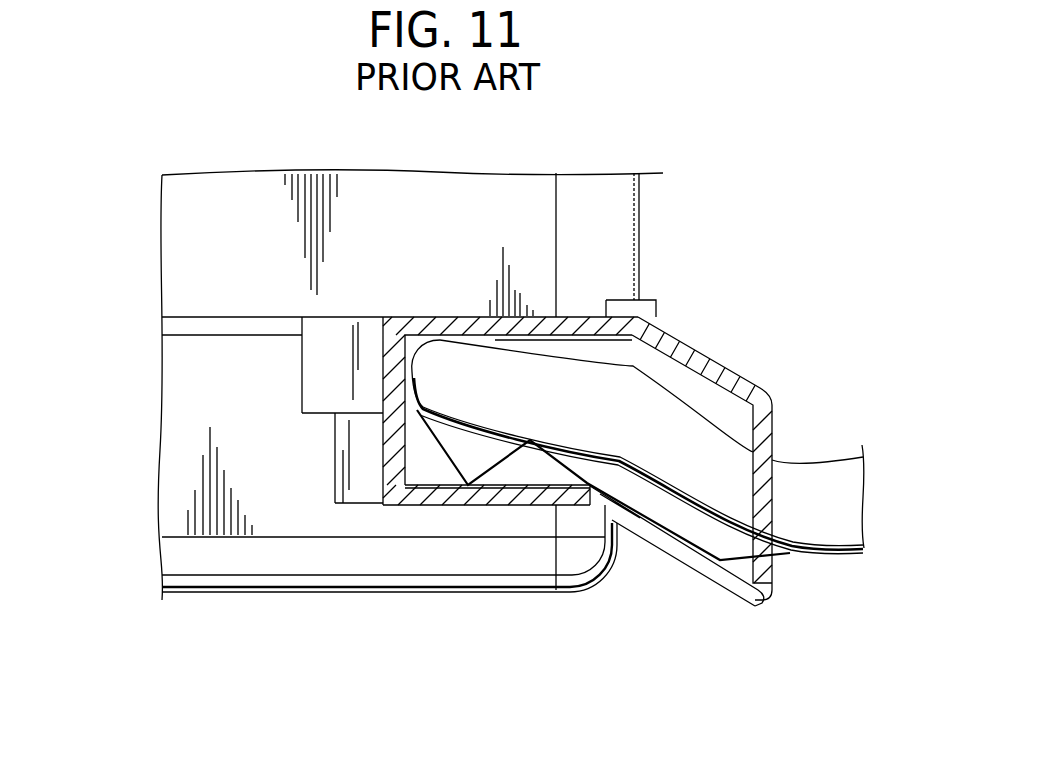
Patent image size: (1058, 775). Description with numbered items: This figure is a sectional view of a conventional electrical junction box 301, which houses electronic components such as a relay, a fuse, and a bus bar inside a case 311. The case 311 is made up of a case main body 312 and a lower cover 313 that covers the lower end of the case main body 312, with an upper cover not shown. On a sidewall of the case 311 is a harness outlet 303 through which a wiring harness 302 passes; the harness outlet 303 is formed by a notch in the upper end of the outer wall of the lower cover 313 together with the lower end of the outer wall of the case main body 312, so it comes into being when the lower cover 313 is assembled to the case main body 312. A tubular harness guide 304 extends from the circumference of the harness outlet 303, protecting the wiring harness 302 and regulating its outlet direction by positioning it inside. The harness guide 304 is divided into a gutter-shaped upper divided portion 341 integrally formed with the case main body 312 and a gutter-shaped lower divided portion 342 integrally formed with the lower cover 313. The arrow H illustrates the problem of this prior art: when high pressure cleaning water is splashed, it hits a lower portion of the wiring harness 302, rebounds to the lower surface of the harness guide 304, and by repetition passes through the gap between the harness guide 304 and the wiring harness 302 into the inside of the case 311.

The electrical junction box 301 is at (736, 142).
The case 311 is at (653, 210).
The case main body 312 is at (640, 262).
The upper divided portion 341 is at (442, 317).
The lower divided portion 342 is at (453, 505).
The harness guide 304 is at (684, 345).
The wiring harness 302 is at (823, 473).
The harness outlet 303 is at (413, 405).
The arrow H is at (790, 556).
The lower cover 313 is at (608, 574).